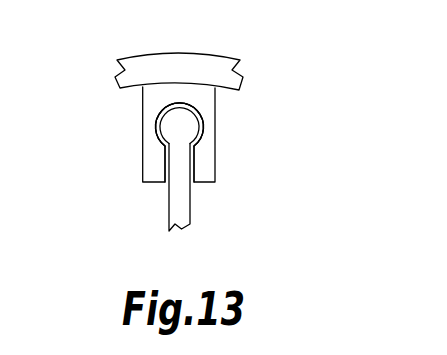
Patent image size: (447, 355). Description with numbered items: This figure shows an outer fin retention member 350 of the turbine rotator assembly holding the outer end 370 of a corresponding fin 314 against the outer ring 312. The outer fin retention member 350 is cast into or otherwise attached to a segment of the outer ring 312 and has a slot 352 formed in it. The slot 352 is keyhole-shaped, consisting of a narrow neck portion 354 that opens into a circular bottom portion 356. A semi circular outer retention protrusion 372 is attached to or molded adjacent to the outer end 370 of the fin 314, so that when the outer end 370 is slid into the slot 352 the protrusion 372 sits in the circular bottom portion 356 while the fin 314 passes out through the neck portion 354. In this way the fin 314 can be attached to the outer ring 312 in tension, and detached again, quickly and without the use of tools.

The outer ring 312 is at (211, 52).
The fin 314 is at (189, 184).
The outer fin retention member 350 is at (202, 160).
The slot 352 is at (160, 188).
The neck portion 354 is at (168, 168).
The circular bottom portion 356 is at (170, 129).
The outer end 370 is at (180, 158).
The semi circular outer retention protrusion 372 is at (188, 128).